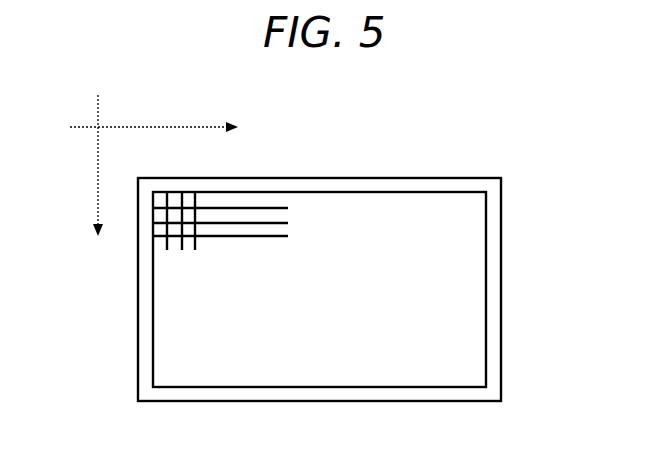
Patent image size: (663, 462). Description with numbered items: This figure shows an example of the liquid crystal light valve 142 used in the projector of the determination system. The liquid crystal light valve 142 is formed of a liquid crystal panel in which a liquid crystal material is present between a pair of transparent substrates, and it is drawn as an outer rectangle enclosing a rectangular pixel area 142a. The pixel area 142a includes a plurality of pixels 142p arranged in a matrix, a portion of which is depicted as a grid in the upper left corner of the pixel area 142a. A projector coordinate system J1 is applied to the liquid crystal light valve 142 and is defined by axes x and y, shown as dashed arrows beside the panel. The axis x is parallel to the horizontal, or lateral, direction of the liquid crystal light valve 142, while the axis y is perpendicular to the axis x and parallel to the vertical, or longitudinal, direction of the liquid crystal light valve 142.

The projector coordinate system J1 is at (74, 109).
The liquid crystal light valve 142 is at (503, 197).
The pixel area 142a is at (357, 192).
The pixels 142p is at (162, 198).